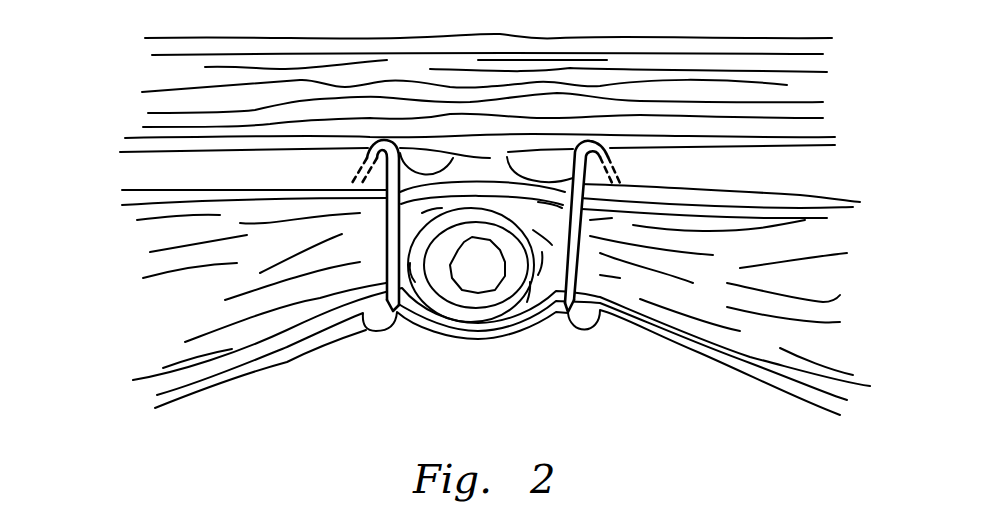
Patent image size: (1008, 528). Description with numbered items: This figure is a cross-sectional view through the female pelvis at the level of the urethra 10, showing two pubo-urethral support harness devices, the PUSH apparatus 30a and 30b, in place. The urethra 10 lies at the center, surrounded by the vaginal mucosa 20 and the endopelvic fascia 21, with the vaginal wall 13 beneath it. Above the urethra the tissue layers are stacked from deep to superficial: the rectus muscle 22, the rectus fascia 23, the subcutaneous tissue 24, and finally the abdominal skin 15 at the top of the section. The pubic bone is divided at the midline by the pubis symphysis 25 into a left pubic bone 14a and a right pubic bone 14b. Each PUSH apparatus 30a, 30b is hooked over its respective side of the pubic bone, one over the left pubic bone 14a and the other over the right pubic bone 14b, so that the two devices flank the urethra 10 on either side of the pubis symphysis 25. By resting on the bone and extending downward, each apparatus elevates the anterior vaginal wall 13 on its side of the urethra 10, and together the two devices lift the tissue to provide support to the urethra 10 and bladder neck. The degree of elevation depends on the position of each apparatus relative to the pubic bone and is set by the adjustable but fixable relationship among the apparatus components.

The urethra 10 is at (478, 266).
The vaginal wall 13 is at (818, 410).
The left pubic bone 14a is at (240, 162).
The right pubic bone 14b is at (713, 163).
The abdominal skin 15 is at (790, 38).
The vaginal mucosa 20 is at (838, 399).
The endopelvic fascia 21 is at (843, 364).
The rectus muscle 22 is at (853, 207).
The rectus fascia 23 is at (833, 147).
The subcutaneous tissue 24 is at (820, 87).
The pubis symphysis 25 is at (488, 170).
The first PUSH apparatus 30a is at (388, 230).
The second PUSH apparatus 30b is at (578, 238).